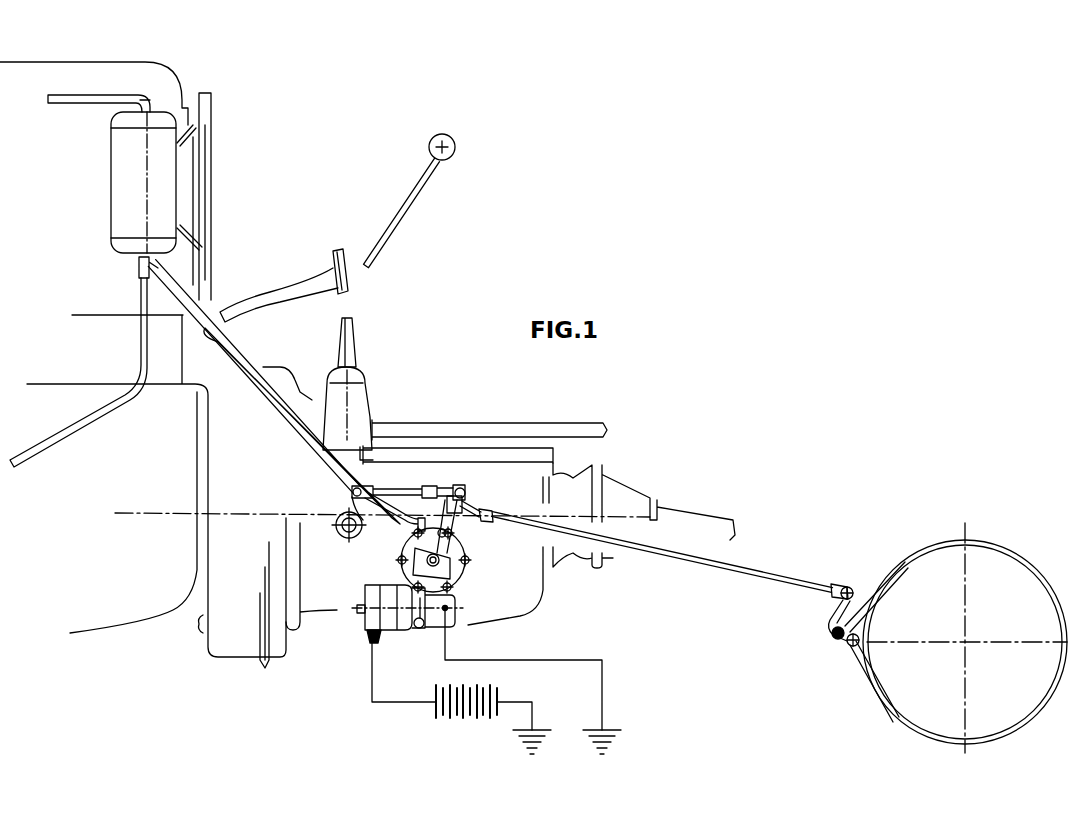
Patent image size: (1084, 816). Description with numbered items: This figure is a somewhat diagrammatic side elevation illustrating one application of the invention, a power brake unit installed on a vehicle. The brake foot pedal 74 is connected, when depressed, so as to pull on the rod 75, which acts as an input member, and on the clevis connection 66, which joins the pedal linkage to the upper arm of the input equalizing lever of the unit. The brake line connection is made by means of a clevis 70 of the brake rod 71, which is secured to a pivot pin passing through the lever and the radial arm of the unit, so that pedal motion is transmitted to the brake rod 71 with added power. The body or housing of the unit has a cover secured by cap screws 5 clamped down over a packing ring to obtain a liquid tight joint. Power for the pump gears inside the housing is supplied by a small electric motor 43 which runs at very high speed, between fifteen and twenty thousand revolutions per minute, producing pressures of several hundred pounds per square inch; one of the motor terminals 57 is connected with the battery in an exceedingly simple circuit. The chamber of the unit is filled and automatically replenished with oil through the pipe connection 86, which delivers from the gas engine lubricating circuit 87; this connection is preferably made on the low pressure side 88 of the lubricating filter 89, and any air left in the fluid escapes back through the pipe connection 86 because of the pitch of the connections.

The lubricating filter 89 is at (128, 192).
The low pressure side 88 is at (139, 268).
The gas engine lubricating circuit 87 is at (141, 296).
The brake foot pedal 74 is at (278, 292).
The rod 75 is at (396, 490).
The clevis connection 66 is at (443, 490).
The clevis 70 is at (472, 514).
The brake rod 71 is at (515, 518).
The pipe connection 86 is at (398, 527).
The cap screws 5 is at (471, 560).
The electric motor 43 is at (372, 595).
The motor terminal 57 is at (368, 640).